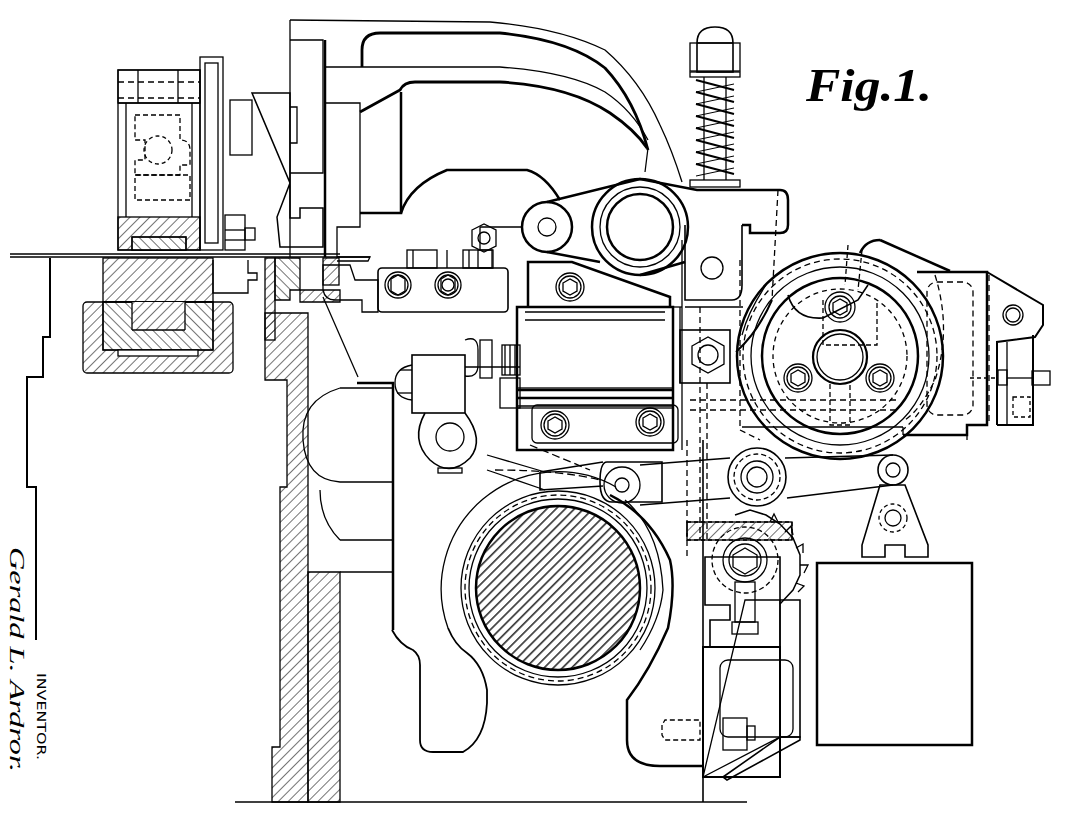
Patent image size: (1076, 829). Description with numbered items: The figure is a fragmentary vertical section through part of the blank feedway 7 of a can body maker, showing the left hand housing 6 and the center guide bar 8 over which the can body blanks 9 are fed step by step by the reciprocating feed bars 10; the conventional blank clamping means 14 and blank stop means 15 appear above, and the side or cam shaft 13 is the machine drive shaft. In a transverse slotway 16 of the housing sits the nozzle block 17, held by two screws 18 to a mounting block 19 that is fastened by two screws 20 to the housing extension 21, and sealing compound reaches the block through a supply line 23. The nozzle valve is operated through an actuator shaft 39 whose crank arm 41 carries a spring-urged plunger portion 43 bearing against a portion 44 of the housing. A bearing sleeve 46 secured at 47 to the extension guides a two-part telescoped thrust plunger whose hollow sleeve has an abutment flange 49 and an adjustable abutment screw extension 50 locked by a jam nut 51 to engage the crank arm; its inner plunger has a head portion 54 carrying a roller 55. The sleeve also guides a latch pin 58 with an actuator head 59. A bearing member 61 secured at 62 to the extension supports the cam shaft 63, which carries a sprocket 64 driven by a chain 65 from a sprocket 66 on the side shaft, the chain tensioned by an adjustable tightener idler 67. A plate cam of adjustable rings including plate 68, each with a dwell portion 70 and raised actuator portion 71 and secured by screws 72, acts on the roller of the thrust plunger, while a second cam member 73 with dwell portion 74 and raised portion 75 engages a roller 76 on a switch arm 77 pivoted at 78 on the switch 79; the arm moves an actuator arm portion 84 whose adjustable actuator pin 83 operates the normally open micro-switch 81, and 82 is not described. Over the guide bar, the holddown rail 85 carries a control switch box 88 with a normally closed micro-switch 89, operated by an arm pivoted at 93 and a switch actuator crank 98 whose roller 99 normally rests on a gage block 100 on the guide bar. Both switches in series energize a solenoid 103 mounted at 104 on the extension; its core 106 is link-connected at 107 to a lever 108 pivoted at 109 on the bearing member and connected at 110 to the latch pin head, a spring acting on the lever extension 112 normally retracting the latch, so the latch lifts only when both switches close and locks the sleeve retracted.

The left hand housing 6 is at (278, 521).
The feedway 7 is at (60, 262).
The center guide bar 8 is at (158, 300).
The can body blanks 9 is at (352, 260).
The reciprocating feed bars 10 is at (300, 275).
The side or cam shaft 13 is at (568, 665).
The blank clamping means 14 is at (352, 180).
The blank stop means 15 is at (265, 100).
The transverse slotway 16 is at (320, 308).
The nozzle block 17 is at (370, 285).
The screws 18 is at (450, 268).
The mounting block 19 is at (478, 228).
The screws 20 is at (420, 250).
The housing extension 21 is at (560, 312).
The supply line 23 is at (486, 250).
The actuator shaft 39 is at (447, 440).
The crank arm 41 is at (468, 345).
The plunger portion 43 is at (395, 388).
The housing portion 44 is at (368, 378).
The bearing sleeve 46 is at (520, 405).
The securing means of bearing sleeve 47 is at (578, 296).
The abutment flange 49 is at (517, 393).
The abutment screw extension 50 is at (517, 318).
The jam nut 51 is at (520, 357).
The head portion 54 is at (711, 304).
The roller 55 is at (735, 330).
The latch pin 58 is at (617, 460).
The actuator head 59 is at (555, 490).
The bearing member 61 is at (826, 262).
The securing means of bearing member 62 is at (673, 560).
The cam shaft 63 is at (835, 362).
The sprocket 64 is at (790, 195).
The chain 65 is at (560, 468).
The sprocket 66 is at (470, 650).
The tightener idler 67 is at (800, 582).
The cam plate 68 is at (842, 299).
The concentric dwell portion 70 is at (800, 260).
The raised actuator cam portion 71 is at (945, 320).
The screws 72 is at (880, 300).
The cam member 73 is at (750, 394).
The concentric dwell portion 74 is at (847, 240).
The raised actuator portion 75 is at (790, 430).
The roller 76 is at (905, 240).
The switch arm 77 is at (930, 268).
The pivot 78 is at (1020, 310).
The switch 79 is at (978, 420).
The micro-switch 81 is at (942, 437).
The boss 82 is at (937, 347).
The actuator pin 83 is at (1010, 385).
The actuator arm portion 84 is at (1035, 352).
The holddown rail 85 is at (118, 224).
The control switch box 88 is at (118, 148).
The micro-switch 89 is at (135, 180).
The pivot 93 is at (130, 75).
The switch actuator crank 98 is at (213, 195).
The roller 99 is at (235, 222).
The block 100 is at (232, 285).
The solenoid 103 is at (970, 650).
The solenoid mounting 104 is at (805, 680).
The core 106 is at (893, 560).
The link connection 107 is at (905, 483).
The lever 108 is at (838, 480).
The pivot 109 is at (748, 475).
The connection 110 is at (628, 490).
The lever extension 112 is at (780, 520).